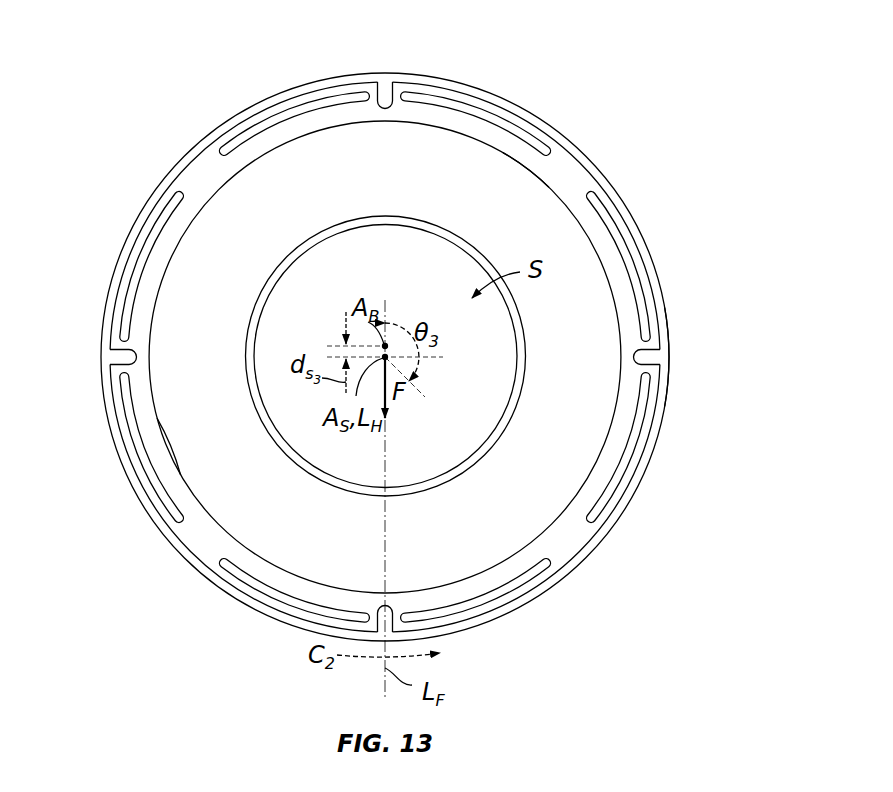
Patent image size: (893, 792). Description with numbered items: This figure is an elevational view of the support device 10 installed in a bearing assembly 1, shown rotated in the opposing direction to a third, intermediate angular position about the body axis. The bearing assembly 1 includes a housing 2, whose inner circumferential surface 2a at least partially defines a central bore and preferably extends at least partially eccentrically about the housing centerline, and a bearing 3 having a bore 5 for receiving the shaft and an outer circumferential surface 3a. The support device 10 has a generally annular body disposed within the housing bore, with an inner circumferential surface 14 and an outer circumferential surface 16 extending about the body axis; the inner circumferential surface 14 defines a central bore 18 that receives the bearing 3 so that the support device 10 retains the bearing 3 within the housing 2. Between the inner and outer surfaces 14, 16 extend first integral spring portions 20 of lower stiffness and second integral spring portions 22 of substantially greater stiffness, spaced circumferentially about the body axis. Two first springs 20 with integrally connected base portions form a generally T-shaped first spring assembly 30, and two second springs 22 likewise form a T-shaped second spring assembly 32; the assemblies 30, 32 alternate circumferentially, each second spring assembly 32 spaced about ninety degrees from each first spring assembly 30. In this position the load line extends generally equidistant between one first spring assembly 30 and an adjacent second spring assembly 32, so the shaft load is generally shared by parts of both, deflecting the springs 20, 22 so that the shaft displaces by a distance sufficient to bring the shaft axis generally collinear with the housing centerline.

The bearing assembly 1 is at (398, 359).
The housing 2 is at (421, 357).
The inner circumferential surface 2a is at (668, 347).
The bearing 3 is at (424, 339).
The outer circumferential surface 3a is at (527, 168).
The bore 5 is at (333, 226).
The support device 10 is at (398, 359).
The inner circumferential surface 14 is at (384, 120).
The outer circumferential surface 16 is at (670, 378).
The central bore 18 is at (168, 448).
The first integral spring portions 20 is at (488, 110).
The second integral spring portions 22 is at (288, 115).
The first spring assembly 30 is at (228, 518).
The second spring assembly 32 is at (545, 518).